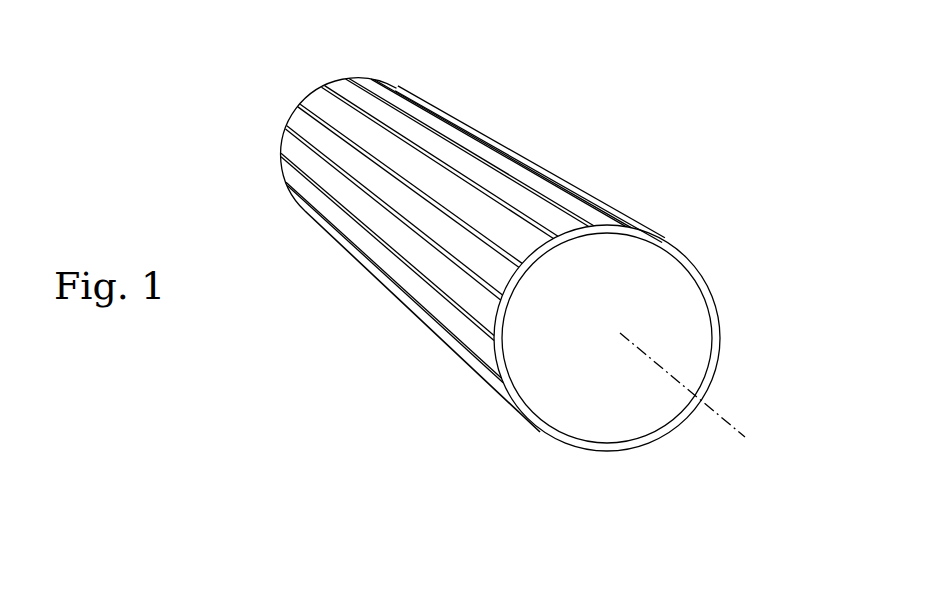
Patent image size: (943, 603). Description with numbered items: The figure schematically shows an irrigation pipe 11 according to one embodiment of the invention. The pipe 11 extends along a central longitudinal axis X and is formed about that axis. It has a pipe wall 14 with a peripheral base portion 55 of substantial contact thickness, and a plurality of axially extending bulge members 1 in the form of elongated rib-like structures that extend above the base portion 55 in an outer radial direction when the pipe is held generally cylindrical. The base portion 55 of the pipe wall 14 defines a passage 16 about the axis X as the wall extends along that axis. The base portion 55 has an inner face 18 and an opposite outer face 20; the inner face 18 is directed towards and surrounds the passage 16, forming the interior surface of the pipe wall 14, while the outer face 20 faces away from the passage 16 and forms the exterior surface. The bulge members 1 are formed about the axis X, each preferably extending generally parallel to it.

The bulge members 1 is at (362, 110).
The irrigation pipe 11 is at (560, 100).
The pipe wall 14 is at (682, 257).
The passage 16 is at (630, 270).
The inner face 18 is at (675, 290).
The outer face 20 is at (713, 280).
The peripheral base portion 55 is at (547, 437).
The axis X is at (732, 425).